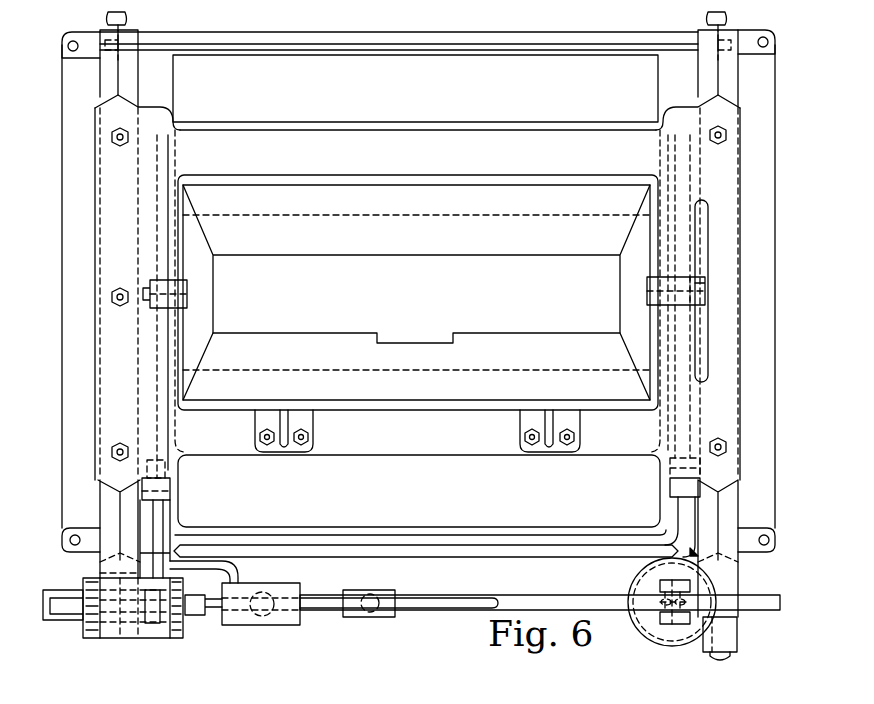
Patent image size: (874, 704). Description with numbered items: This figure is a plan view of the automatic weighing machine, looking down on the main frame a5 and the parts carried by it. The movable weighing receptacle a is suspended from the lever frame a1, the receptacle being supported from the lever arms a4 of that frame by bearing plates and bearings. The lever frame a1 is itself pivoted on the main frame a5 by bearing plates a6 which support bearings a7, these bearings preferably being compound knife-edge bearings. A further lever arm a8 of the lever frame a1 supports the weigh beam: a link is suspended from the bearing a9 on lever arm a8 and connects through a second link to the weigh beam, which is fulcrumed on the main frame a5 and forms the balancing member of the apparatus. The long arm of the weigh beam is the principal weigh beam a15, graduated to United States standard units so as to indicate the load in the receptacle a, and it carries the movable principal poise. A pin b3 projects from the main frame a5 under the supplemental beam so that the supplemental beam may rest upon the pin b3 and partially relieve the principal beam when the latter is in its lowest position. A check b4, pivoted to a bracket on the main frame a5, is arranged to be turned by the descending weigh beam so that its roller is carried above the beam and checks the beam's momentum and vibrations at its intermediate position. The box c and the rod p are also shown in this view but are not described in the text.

The movable weighing receptacle a is at (418, 314).
The lever frame a1 is at (492, 536).
The lever arms a4 is at (161, 406).
The main frame a5 is at (398, 33).
The bearing plates a6 is at (172, 490).
The bearings a7 is at (165, 519).
The lever arm a8 is at (172, 625).
The bearing a9 is at (692, 398).
The principal weigh beam a15 is at (572, 603).
The pin b3 is at (243, 581).
The check b4 is at (737, 648).
The box c is at (458, 256).
The rod p is at (450, 604).